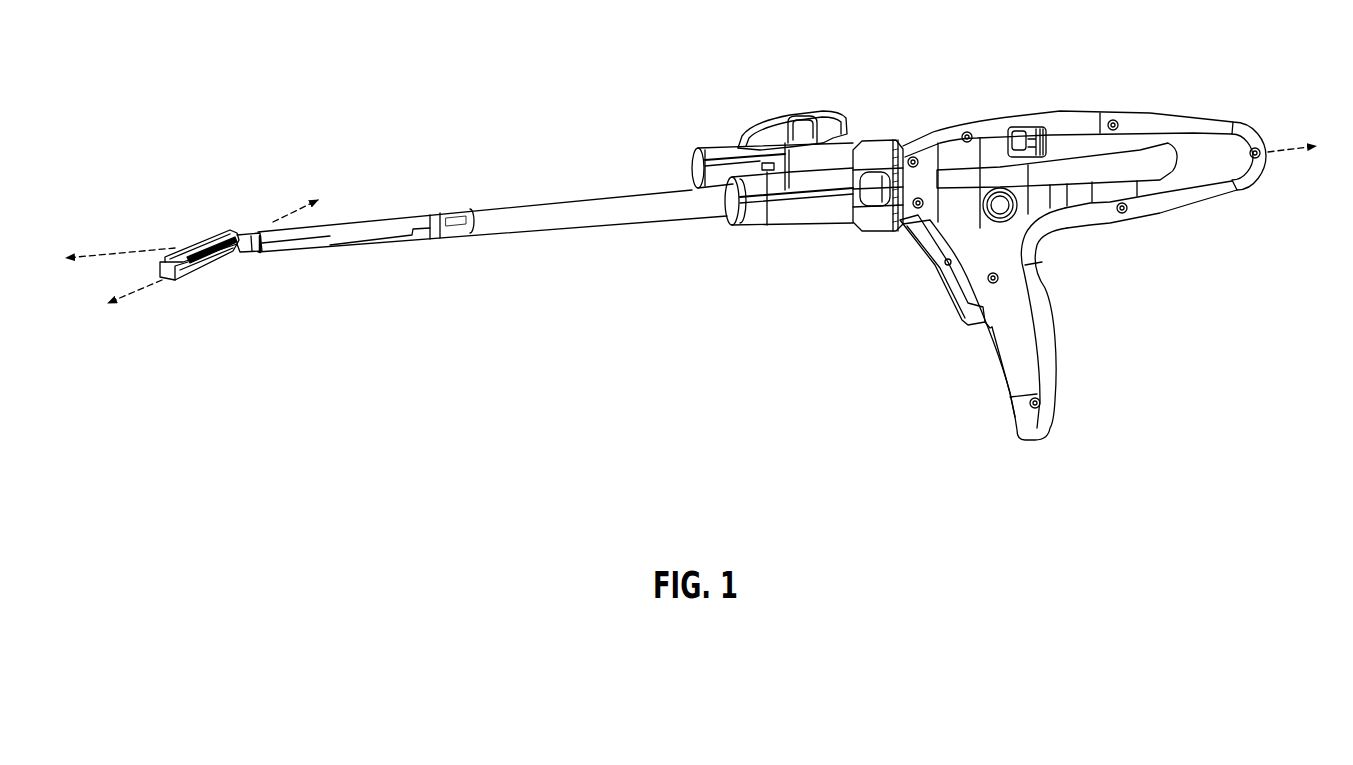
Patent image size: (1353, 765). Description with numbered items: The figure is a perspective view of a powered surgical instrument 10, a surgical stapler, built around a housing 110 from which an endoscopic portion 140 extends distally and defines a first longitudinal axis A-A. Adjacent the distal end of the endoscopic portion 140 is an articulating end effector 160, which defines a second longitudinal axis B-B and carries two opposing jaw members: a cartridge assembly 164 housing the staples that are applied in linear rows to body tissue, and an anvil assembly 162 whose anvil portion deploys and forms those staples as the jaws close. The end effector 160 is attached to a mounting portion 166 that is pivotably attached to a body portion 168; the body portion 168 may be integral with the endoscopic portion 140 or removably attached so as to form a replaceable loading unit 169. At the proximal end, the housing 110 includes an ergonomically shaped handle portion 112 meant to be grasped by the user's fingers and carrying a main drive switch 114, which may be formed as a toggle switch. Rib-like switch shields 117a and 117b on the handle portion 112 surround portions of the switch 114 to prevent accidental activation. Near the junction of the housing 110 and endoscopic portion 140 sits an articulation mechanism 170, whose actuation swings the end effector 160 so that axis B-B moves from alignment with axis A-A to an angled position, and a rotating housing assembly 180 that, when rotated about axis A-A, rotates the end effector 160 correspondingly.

The powered surgical instrument 10 is at (564, 75).
The housing 110 is at (1087, 106).
The handle portion 112 is at (1058, 322).
The main drive switch 114 is at (931, 298).
The switch shield 117a is at (913, 247).
The switch shield 117b is at (980, 322).
The endoscopic portion 140 is at (551, 182).
The end effector 160 is at (217, 216).
The anvil assembly 162 is at (183, 247).
The cartridge assembly 164 is at (203, 268).
The mounting portion 166 is at (268, 250).
The body portion 168 is at (372, 243).
The loading unit 169 is at (347, 211).
The articulation mechanism 170 is at (818, 90).
The rotating housing assembly 180 is at (907, 112).